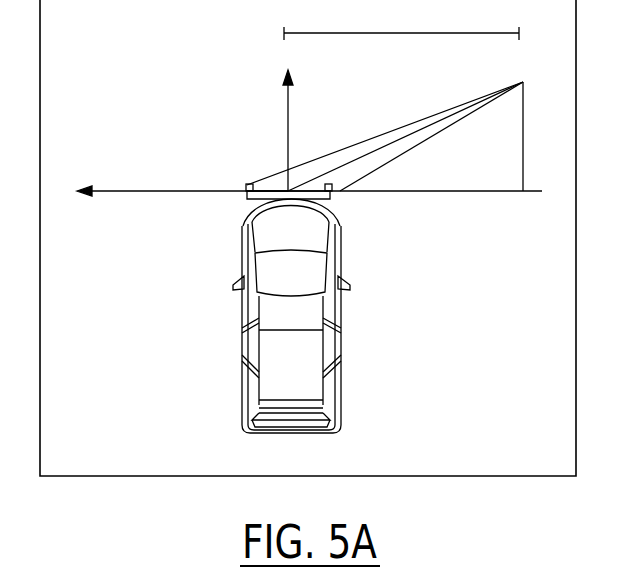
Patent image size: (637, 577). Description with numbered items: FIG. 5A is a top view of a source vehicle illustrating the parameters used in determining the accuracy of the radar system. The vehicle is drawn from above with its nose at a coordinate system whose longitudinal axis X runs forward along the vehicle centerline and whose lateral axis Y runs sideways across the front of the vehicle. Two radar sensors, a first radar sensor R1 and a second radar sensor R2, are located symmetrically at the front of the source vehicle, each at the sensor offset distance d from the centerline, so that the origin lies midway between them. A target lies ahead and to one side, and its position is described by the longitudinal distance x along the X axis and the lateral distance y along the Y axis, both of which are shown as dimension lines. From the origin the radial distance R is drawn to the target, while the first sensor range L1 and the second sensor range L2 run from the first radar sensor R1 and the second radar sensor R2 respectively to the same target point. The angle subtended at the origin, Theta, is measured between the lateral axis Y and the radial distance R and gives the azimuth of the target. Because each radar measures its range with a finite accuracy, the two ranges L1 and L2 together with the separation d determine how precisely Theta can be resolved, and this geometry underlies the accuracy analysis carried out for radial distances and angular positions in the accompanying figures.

The longitudinal axis X is at (274, 106).
The lateral axis Y is at (306, 173).
The longitudinal distance x is at (539, 136).
The lateral distance y is at (401, 21).
The sensor offset distance d is at (267, 179).
The first radar sensor R1 is at (233, 206).
The second radar sensor R2 is at (346, 206).
The first sensor range L1 is at (370, 132).
The second sensor range L2 is at (440, 143).
The radial distance R is at (398, 152).
The angle subtended at the origin Theta is at (326, 173).